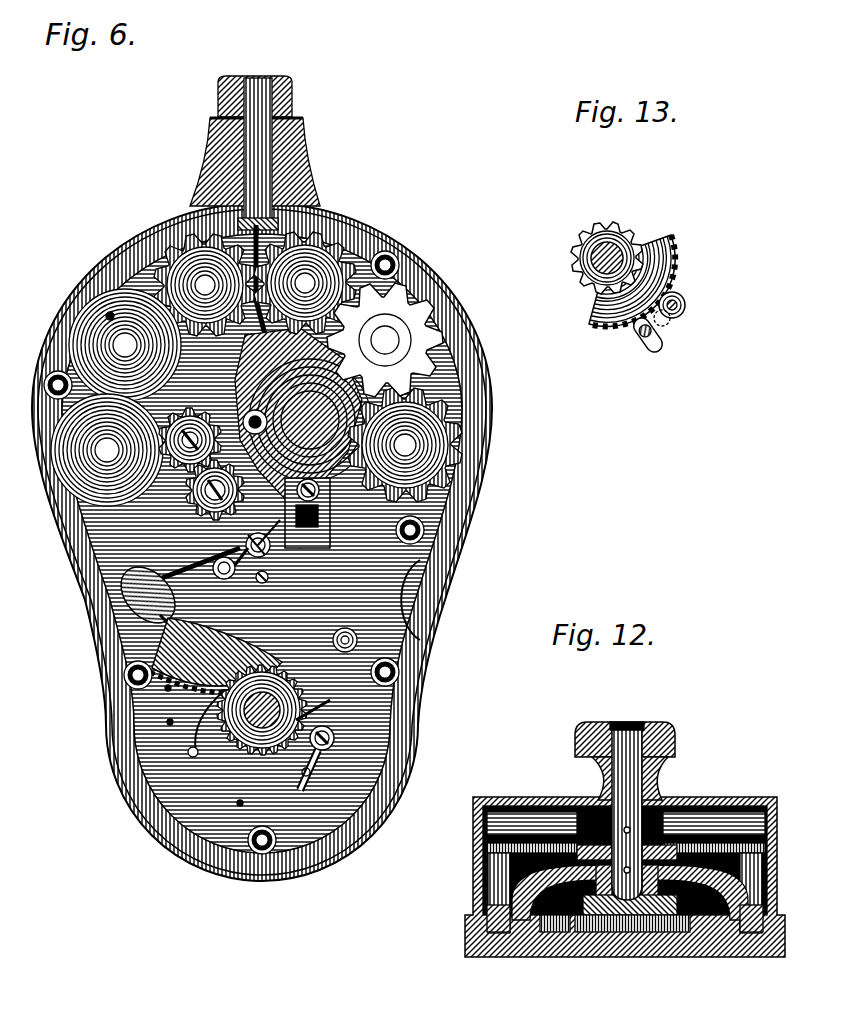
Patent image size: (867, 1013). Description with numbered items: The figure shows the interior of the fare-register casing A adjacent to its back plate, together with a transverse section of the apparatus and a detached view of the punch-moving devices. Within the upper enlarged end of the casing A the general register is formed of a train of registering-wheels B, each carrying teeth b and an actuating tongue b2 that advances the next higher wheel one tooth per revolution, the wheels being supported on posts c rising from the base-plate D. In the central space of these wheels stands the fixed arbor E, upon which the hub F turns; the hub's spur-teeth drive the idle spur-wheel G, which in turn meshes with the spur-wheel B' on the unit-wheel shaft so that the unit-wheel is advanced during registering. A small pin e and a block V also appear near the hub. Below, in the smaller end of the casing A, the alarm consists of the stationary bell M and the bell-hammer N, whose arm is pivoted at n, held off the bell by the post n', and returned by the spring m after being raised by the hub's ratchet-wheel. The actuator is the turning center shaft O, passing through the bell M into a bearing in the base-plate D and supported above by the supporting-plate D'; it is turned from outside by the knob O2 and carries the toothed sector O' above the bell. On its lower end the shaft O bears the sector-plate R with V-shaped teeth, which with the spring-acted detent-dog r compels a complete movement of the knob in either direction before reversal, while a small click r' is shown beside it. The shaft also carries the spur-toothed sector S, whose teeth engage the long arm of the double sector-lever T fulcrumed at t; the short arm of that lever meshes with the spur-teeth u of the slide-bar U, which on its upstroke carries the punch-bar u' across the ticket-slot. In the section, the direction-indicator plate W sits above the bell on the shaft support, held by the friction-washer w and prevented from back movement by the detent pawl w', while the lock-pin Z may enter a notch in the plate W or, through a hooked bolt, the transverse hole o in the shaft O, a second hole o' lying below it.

In FIG. 6, the casing A is at (262, 542).
In FIG. 12, the casing A is at (500, 940).
In FIG. 6, the slide-bar U is at (259, 141).
In FIG. 6, the spur-teeth u is at (264, 154).
In FIG. 6, the punch-bar u' is at (278, 385).
In FIG. 6, the posts c is at (387, 252).
In FIG. 6, the teeth b is at (205, 285).
In FIG. 6, the registering-wheels B is at (358, 367).
In FIG. 6, the actuating tongue b2 is at (369, 340).
In FIG. 6, the arbor E is at (125, 345).
In FIG. 6, the barrel pin e is at (108, 320).
In FIG. 6, the spur-wheel B' is at (87, 450).
In FIG. 6, the idle spur-wheel G is at (190, 440).
In FIG. 6, the fulcrum t is at (210, 490).
In FIG. 6, the hub F is at (303, 438).
In FIG. 6, the detent block V is at (317, 514).
In FIG. 6, the pivot n is at (273, 549).
In FIG. 6, the spring m is at (262, 584).
In FIG. 6, the post n' is at (227, 577).
In FIG. 6, the bell-hammer N is at (175, 604).
In FIG. 6, the double sector-lever T is at (216, 655).
In FIG. 6, the turning center shaft O is at (262, 710).
In FIG. 13, the turning center shaft O is at (597, 261).
In FIG. 6, the spur-toothed sector S is at (205, 723).
In FIG. 13, the spur-toothed sector S is at (607, 248).
In FIG. 12, the spur-toothed sector S is at (600, 930).
In FIG. 6, the detent-dog r is at (324, 745).
In FIG. 13, the sector-plate R is at (632, 290).
In FIG. 12, the sector-plate R is at (668, 935).
In FIG. 13, the click lever r' is at (655, 323).
In FIG. 12, the bell M is at (730, 940).
In FIG. 12, the direction-indicator plate W is at (704, 805).
In FIG. 12, the friction-washer w is at (626, 813).
In FIG. 12, the detent pawl w' is at (601, 883).
In FIG. 12, the supporting-plate D' is at (657, 881).
In FIG. 12, the lock-pin Z is at (760, 818).
In FIG. 12, the base-plate D is at (647, 924).
In FIG. 12, the knob O2 is at (635, 750).
In FIG. 12, the toothed sector O' is at (627, 815).
In FIG. 12, the transverse hole o is at (626, 824).
In FIG. 12, the hole o' is at (624, 861).